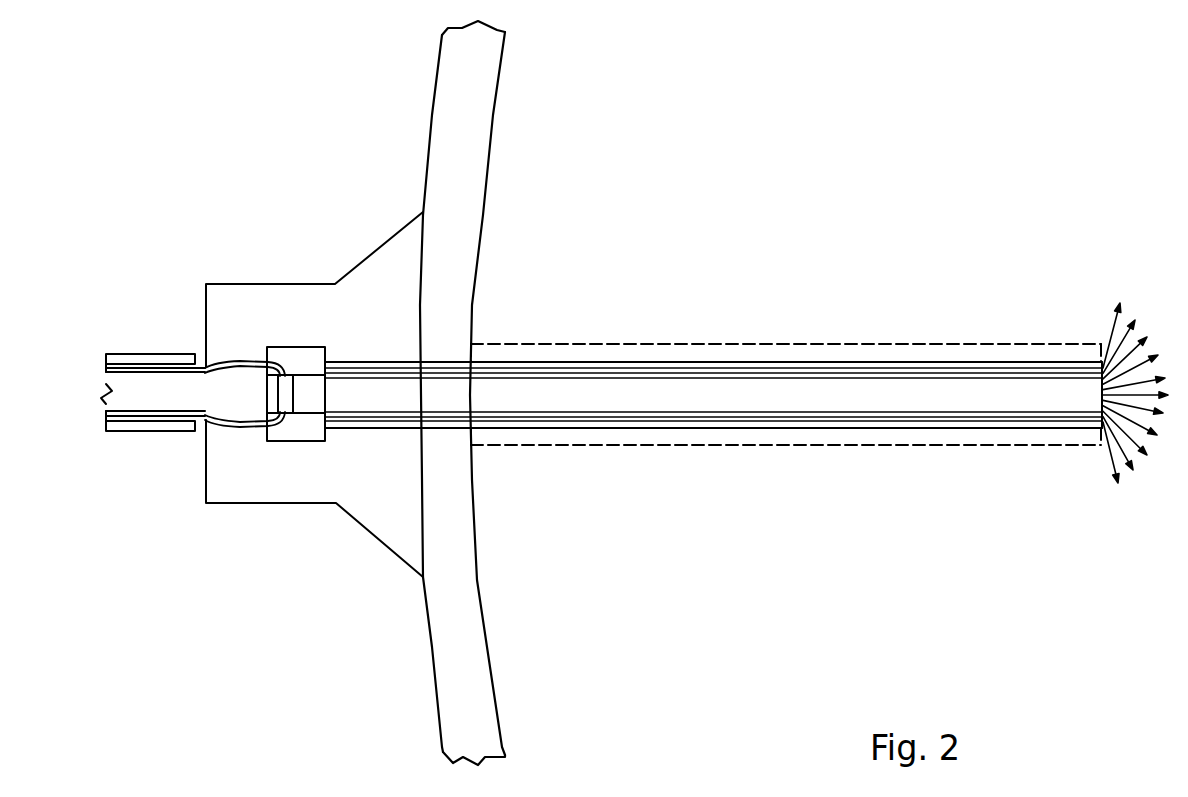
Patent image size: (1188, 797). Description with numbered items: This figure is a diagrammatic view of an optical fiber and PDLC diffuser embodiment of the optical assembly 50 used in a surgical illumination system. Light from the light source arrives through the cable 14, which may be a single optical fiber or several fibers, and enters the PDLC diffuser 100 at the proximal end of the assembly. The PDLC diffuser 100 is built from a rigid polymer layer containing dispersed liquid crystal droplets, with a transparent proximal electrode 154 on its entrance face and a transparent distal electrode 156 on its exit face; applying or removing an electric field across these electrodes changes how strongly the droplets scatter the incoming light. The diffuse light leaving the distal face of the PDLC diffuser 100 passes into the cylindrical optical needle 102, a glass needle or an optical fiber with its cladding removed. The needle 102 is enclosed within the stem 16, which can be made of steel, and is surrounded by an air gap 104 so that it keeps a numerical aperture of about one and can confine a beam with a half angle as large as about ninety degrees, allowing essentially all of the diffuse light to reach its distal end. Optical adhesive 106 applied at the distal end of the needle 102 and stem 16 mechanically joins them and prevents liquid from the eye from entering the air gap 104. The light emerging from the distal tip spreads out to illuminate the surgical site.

The cable 14 is at (120, 404).
The stem 16 is at (632, 367).
The optical assembly 50 is at (580, 447).
The PDLC diffuser 100 is at (291, 414).
The optical needle 102 is at (620, 412).
The air gap 104 is at (878, 413).
The optical adhesive 106 is at (1083, 410).
The proximal electrode 154 is at (247, 422).
The distal electrode 156 is at (204, 368).